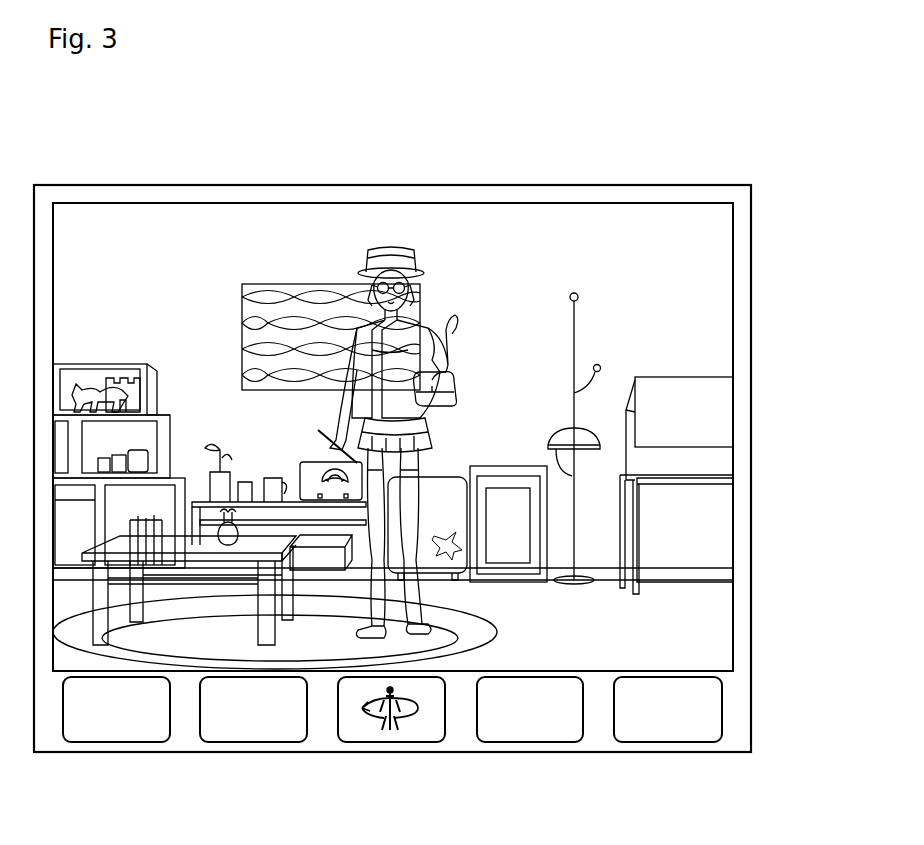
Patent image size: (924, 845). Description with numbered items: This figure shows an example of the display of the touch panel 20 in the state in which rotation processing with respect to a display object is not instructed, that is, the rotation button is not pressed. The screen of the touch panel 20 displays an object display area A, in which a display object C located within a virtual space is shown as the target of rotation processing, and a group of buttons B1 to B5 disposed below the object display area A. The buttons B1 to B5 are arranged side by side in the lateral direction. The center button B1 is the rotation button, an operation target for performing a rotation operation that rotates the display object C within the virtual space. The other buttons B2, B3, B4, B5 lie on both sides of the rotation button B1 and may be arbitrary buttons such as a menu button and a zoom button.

The touch panel 20 is at (752, 362).
The object display area A is at (733, 515).
The display object C is at (436, 320).
The rotation button B1 is at (393, 742).
The button B2 is at (528, 742).
The button B3 is at (666, 742).
The button B4 is at (256, 742).
The button B5 is at (118, 742).